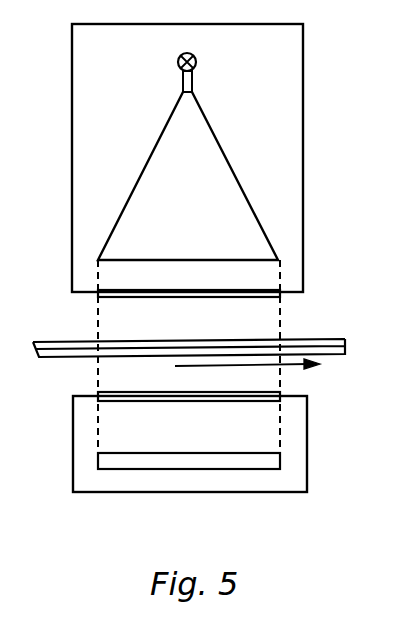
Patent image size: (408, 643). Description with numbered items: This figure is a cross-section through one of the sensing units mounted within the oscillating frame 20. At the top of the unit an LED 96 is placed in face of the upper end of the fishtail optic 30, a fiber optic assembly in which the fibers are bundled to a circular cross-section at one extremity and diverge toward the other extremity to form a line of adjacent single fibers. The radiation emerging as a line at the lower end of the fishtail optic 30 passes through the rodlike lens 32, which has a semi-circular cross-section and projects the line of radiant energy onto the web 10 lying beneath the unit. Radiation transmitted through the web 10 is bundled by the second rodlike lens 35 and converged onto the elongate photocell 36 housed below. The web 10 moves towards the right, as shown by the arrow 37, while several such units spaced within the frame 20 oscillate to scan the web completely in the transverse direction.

The web 10 is at (52, 351).
The frame 20 is at (90, 164).
The fishtail optic 30 is at (233, 202).
The rodlike lens 32 is at (100, 294).
The second rodlike lens 35 is at (100, 397).
The elongate photocell 36 is at (106, 460).
The arrow 37 is at (285, 365).
The LED 96 is at (197, 60).